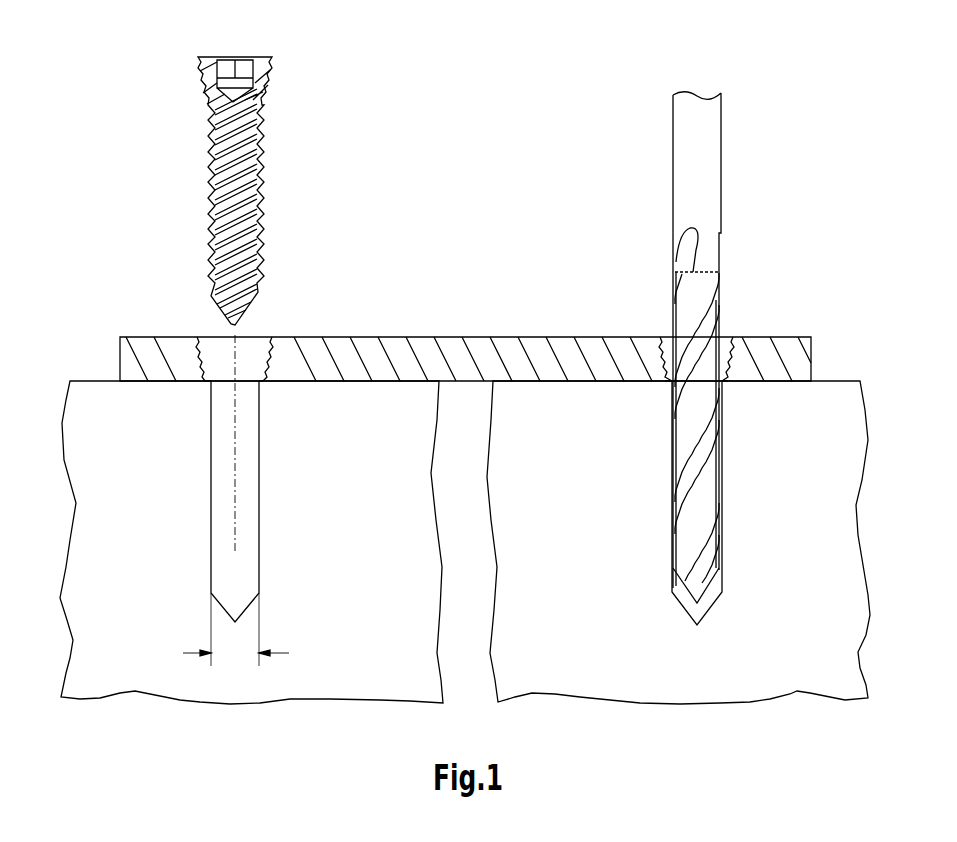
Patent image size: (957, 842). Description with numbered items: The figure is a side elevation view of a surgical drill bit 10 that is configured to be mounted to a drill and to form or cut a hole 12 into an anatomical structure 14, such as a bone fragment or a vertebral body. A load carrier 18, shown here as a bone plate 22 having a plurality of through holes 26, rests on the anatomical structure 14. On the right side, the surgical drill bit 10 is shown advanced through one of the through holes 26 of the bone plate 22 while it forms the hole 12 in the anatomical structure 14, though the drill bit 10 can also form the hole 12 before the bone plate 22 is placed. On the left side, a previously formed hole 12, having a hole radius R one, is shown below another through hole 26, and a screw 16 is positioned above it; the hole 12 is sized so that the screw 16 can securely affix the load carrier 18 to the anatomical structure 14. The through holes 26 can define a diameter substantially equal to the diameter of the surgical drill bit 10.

The surgical drill bit 10 is at (673, 185).
The hole 12 is at (226, 562).
The anatomical structure 14 is at (818, 485).
The screw 16 is at (211, 213).
The load carrier 18 is at (368, 359).
The bone plate 22 is at (518, 362).
The through holes 26 is at (247, 343).